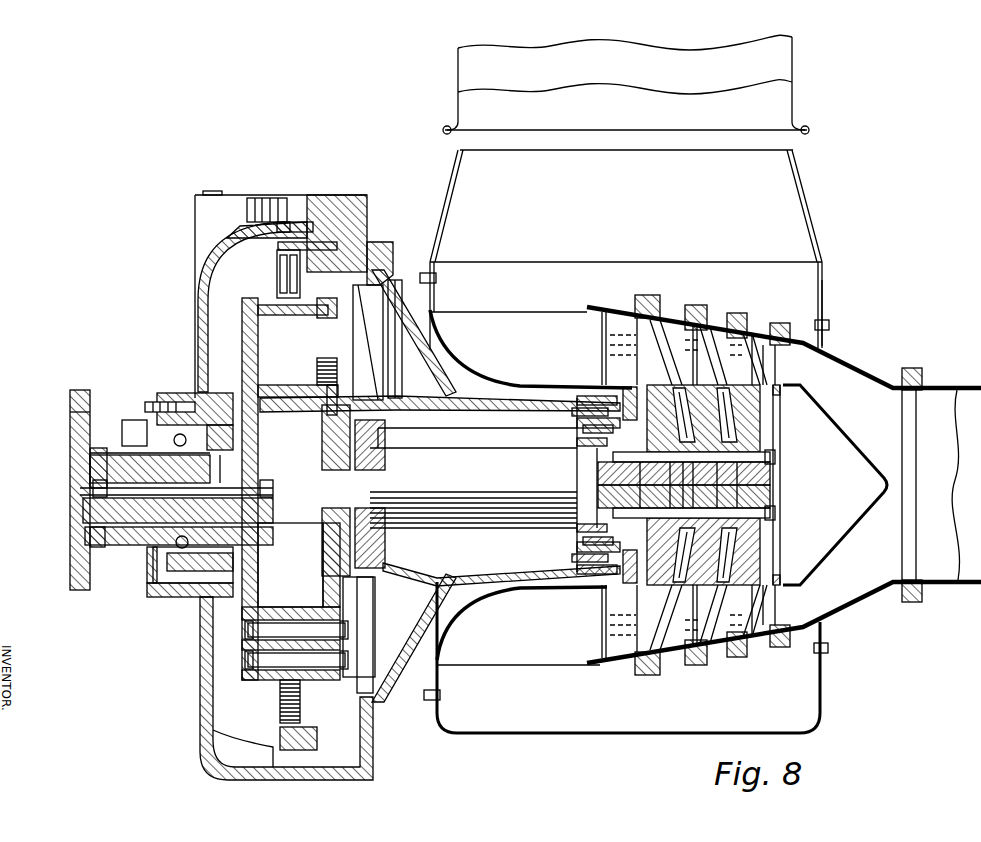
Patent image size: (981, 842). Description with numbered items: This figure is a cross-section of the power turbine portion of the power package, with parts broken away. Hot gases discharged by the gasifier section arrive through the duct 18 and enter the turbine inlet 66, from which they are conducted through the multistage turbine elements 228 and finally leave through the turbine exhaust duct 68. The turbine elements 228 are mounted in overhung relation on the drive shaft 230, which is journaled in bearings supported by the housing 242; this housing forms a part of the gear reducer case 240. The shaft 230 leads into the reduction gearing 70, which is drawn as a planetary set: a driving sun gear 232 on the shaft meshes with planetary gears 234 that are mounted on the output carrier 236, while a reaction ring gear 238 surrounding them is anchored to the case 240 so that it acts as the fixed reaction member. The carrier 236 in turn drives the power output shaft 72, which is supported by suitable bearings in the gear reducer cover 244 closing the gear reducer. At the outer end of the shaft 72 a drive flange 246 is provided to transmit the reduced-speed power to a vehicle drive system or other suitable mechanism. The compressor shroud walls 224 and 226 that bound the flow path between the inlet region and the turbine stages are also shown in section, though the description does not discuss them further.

The duct 18 is at (933, 582).
The turbine inlet 66 is at (815, 227).
The turbine exhaust duct 68 is at (790, 88).
The reduction gearing 70 is at (197, 287).
The power output shaft 72 is at (107, 465).
The compressor shroud upper 224 is at (457, 355).
The compressor shroud lower 226 is at (613, 637).
The multistage turbine elements 228 is at (660, 640).
The drive shaft 230 is at (413, 522).
The driving sun gear 232 is at (284, 508).
The planetary gears 234 is at (270, 265).
The output carrier 236 is at (242, 310).
The reaction ring gear 238 is at (300, 224).
The gear reducer case 240 is at (353, 197).
The housing 242 is at (395, 280).
The gear reducer cover 244 is at (200, 660).
The drive flange 246 is at (78, 392).